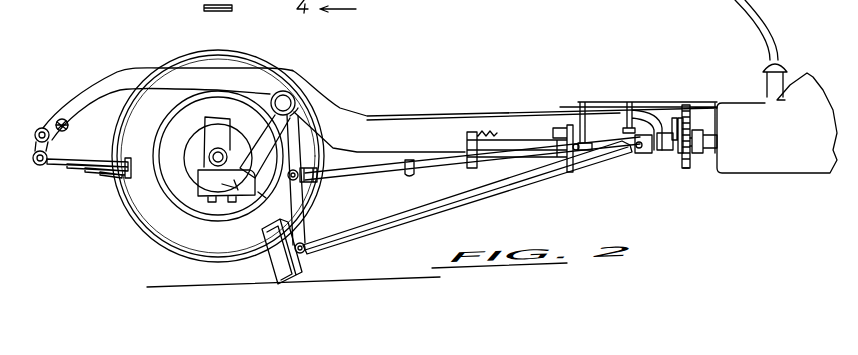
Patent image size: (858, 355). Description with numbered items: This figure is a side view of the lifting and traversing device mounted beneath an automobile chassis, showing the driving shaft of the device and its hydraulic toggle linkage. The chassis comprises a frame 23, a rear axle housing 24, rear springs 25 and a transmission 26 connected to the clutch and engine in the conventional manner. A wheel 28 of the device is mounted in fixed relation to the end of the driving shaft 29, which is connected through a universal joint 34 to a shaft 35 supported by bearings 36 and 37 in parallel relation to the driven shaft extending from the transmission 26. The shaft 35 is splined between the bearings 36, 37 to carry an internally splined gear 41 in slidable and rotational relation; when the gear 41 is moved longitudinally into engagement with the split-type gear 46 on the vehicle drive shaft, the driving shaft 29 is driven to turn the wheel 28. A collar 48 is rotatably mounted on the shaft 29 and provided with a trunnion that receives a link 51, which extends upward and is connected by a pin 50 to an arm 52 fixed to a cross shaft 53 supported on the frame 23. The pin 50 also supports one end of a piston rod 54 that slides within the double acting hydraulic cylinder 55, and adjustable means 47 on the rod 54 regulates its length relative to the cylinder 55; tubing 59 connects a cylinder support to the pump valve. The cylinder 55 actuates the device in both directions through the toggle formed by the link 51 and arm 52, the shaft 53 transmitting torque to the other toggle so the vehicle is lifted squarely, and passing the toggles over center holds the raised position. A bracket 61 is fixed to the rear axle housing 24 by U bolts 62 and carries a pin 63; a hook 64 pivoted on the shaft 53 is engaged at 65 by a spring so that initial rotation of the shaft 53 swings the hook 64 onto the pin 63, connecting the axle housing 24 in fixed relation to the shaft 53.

The frame 23 is at (457, 108).
The rear axle housing 24 is at (213, 157).
The rear springs 25 is at (100, 178).
The transmission 26 is at (768, 158).
The wheels 28 is at (284, 281).
The driving shaft 29 is at (510, 184).
The universal joint 34 is at (637, 158).
The shaft 35 is at (655, 152).
The bearing 36 is at (675, 154).
The bearing 37 is at (710, 156).
The gear 41 is at (688, 170).
The gear 46 is at (683, 105).
The adjustable means 47 is at (325, 167).
The collars 48 is at (307, 250).
The pins 50 is at (323, 181).
The links 51 is at (303, 200).
The arms 52 is at (300, 118).
The shaft 53 is at (280, 91).
The piston rod 54 is at (381, 165).
The cylinder 55 is at (510, 145).
The tubing 59 is at (583, 123).
The brackets 61 is at (225, 188).
The U bolts 62 is at (205, 162).
The pins 63 is at (236, 186).
The hooks 64 is at (262, 198).
The spring engagement point 65 is at (296, 113).